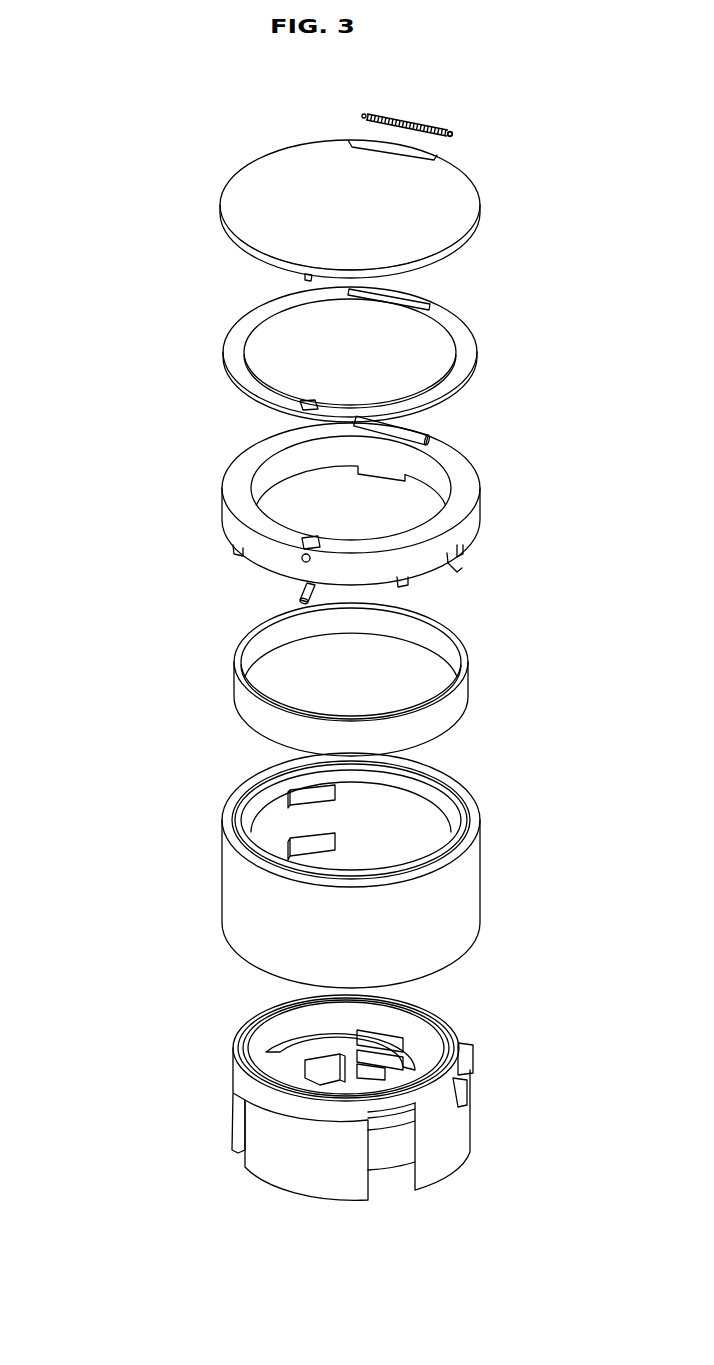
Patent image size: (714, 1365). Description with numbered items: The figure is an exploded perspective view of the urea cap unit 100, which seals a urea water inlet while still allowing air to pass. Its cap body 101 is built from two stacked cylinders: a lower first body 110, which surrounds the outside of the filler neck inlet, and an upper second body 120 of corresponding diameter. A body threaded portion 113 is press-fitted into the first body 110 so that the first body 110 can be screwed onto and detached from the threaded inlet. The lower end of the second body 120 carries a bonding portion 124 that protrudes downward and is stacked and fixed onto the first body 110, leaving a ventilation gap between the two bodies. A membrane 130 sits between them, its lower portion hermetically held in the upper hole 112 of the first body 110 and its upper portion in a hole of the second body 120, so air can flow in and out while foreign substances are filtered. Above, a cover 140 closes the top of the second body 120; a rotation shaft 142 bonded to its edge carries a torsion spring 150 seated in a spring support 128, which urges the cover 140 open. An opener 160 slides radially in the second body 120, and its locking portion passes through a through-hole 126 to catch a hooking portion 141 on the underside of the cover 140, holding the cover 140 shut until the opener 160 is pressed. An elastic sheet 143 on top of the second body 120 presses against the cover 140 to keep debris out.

The urea cap unit 100 is at (102, 116).
The cap body 101 is at (85, 476).
The first body 110 is at (313, 866).
The upper hole 112 is at (464, 806).
The body threaded portion 113 is at (224, 1103).
The second body 120 is at (212, 497).
The bonding portion 124 is at (450, 572).
The through-hole 126 is at (306, 537).
The spring support 128 is at (430, 437).
The membrane 130 is at (478, 659).
The cover 140 is at (212, 188).
The hooking portion 141 is at (304, 277).
The rotation shaft 142 is at (451, 134).
The elastic sheet 143 is at (485, 334).
The torsion spring 150 is at (415, 120).
The opener 160 is at (300, 592).